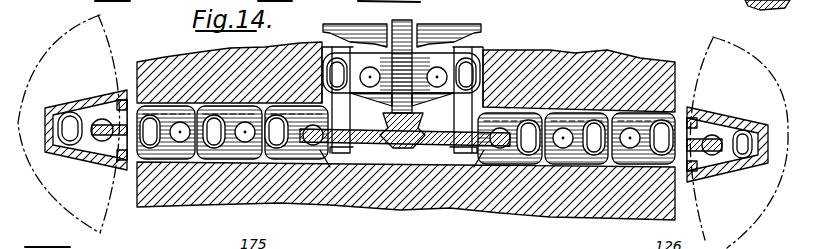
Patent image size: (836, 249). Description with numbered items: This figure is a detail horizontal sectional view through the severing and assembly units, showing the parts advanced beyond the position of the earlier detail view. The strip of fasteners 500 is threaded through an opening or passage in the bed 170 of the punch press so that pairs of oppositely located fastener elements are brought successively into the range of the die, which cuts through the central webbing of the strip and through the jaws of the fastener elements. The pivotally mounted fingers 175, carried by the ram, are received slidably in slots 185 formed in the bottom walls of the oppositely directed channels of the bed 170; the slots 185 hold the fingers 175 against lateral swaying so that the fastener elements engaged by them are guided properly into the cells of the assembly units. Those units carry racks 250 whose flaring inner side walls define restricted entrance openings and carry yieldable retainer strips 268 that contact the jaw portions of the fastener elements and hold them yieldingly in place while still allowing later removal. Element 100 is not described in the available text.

The wedge / pusher member 100 is at (393, 138).
The bed 170 is at (560, 63).
The fingers 175 is at (102, 125).
The slots 185 is at (178, 125).
The racks 250 is at (83, 97).
The yieldable retainer strips 268 is at (403, 131).
The strip of fasteners 500 is at (408, 42).